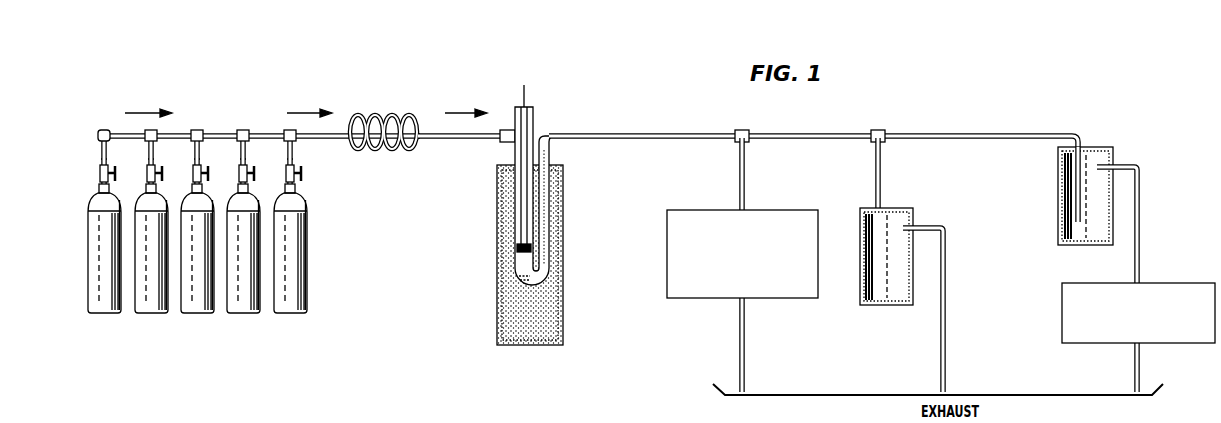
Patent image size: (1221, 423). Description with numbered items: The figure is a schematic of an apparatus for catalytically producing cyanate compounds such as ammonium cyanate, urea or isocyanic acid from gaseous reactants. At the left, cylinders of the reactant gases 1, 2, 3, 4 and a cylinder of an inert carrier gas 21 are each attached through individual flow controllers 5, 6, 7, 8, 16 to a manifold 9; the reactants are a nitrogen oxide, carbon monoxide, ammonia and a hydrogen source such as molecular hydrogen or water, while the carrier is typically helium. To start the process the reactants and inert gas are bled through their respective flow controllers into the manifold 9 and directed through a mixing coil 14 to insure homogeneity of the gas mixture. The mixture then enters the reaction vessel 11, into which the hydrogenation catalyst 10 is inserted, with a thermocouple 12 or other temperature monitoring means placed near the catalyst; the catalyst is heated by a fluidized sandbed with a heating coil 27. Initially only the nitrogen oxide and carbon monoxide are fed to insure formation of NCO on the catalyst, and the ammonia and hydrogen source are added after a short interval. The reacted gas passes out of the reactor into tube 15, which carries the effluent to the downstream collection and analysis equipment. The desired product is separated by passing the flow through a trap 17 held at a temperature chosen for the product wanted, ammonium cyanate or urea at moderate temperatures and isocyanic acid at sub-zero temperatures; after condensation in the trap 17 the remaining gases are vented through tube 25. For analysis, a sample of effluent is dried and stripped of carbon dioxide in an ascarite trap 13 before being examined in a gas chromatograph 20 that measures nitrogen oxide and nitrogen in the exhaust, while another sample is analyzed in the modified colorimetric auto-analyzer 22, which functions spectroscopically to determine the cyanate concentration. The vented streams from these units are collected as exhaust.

The cylinder of reactant gas 1 is at (95, 308).
The cylinder of reactant gas 2 is at (142, 308).
The cylinder of reactant gas 3 is at (188, 308).
The cylinder of reactant gas 4 is at (234, 308).
The cylinder of inert carrier gas 21 is at (281, 308).
The flow controller 5 is at (99, 175).
The flow controller 6 is at (146, 175).
The flow controller 7 is at (192, 175).
The flow controller 8 is at (238, 175).
The flow controller 16 is at (304, 175).
The manifold 9 is at (218, 133).
The mixing coil 14 is at (385, 120).
The reaction vessel 11 is at (514, 152).
The thermocouple 12 is at (516, 204).
The catalyst 10 is at (517, 248).
The heating coil 27 is at (505, 346).
The tube 15 is at (650, 133).
The auto-analyzer 22 is at (666, 255).
The trap 17 is at (893, 218).
The tube 25 is at (941, 352).
The ascarite trap 13 is at (1062, 208).
The gas chromatograph 20 is at (1061, 315).